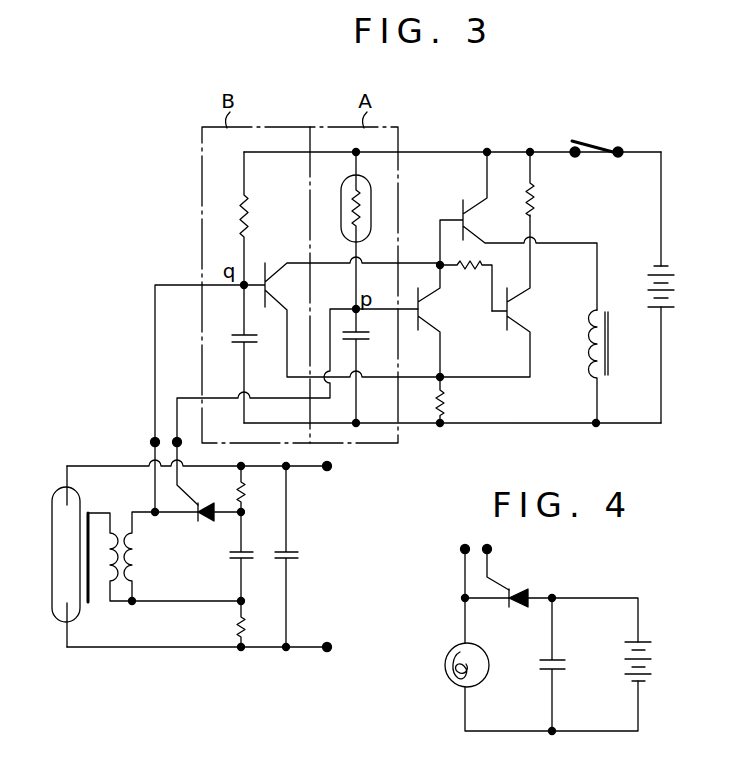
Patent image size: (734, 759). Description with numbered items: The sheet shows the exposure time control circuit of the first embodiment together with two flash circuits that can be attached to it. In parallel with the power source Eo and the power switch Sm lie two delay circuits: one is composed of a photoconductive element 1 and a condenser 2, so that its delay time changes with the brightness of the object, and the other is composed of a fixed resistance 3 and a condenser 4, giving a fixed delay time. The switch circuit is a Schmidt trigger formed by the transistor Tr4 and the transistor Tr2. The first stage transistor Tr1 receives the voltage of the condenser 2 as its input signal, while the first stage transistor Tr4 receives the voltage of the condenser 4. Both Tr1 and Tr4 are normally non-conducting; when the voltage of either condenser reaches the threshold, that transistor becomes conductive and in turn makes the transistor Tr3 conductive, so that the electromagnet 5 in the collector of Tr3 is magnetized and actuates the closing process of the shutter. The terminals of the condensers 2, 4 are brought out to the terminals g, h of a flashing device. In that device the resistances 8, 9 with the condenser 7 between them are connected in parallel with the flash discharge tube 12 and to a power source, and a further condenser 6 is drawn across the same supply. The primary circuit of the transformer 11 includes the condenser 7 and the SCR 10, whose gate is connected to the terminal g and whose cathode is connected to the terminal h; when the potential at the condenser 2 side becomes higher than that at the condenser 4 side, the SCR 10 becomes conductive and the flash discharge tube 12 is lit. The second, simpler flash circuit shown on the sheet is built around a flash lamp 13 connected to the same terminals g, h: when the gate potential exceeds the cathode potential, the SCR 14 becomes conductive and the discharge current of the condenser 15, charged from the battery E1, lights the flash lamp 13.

In FIG. 3, the photoconductive element 1 is at (372, 198).
In FIG. 3, the condenser 2 is at (360, 366).
In FIG. 3, the fixed resistance 3 is at (253, 218).
In FIG. 3, the condenser 4 is at (247, 354).
In FIG. 3, the electromagnet 5 is at (607, 366).
In FIG. 3, the capacitor 6 is at (289, 556).
In FIG. 3, the condenser 7 is at (244, 556).
In FIG. 3, the resistance 8 is at (249, 489).
In FIG. 3, the resistance 9 is at (249, 624).
In FIG. 3, the SCR 10 is at (198, 526).
In FIG. 3, the transformer 11 is at (164, 557).
In FIG. 3, the flash discharge tube 12 is at (57, 596).
In FIG. 4, the flash lamp 13 is at (448, 658).
In FIG. 4, the SCR 14 is at (519, 582).
In FIG. 4, the condenser 15 is at (560, 664).
In FIG. 3, the first stage transistor Tr1 is at (441, 321).
In FIG. 3, the transistor Tr2 is at (500, 296).
In FIG. 3, the transistor Tr3 is at (518, 231).
In FIG. 3, the first stage transistor Tr4 is at (342, 305).
In FIG. 3, the power switch Sm is at (598, 141).
In FIG. 3, the power source Eo is at (675, 286).
In FIG. 4, the battery E1 is at (655, 661).
In FIG. 3, the terminal g is at (174, 437).
In FIG. 4, the terminal g is at (494, 550).
In FIG. 3, the terminal h is at (151, 440).
In FIG. 4, the terminal h is at (458, 550).